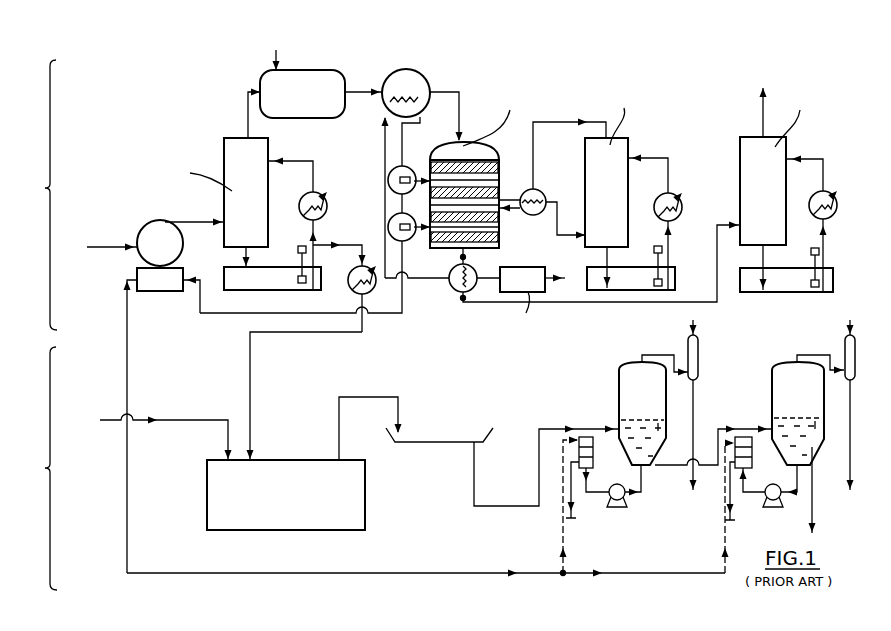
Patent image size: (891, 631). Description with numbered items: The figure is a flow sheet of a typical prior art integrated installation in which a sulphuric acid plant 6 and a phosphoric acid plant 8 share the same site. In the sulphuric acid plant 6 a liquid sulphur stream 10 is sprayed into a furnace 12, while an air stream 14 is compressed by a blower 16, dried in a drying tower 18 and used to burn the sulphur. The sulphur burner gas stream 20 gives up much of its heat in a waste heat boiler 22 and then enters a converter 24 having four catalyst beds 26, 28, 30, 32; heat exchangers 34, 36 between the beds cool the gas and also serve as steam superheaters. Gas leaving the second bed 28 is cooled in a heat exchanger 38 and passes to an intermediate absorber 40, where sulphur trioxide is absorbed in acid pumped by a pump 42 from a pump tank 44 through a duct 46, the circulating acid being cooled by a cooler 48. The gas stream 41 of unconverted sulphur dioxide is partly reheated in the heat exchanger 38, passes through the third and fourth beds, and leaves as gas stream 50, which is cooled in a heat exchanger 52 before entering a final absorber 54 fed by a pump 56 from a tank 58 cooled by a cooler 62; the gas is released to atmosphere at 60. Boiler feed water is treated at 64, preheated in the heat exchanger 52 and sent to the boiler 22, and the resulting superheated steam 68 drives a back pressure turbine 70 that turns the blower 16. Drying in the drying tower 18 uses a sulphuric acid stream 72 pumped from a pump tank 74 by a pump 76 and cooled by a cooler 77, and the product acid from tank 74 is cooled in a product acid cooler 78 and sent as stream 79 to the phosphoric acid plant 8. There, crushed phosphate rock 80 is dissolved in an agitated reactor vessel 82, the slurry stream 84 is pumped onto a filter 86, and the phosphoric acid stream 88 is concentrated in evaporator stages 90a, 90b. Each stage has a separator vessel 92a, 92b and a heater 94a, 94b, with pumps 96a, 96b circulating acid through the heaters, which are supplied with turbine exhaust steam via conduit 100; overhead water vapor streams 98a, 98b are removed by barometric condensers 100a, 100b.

The sulphuric acid plant 6 is at (43, 195).
The phosphoric acid plant 8 is at (43, 468).
The sulphur stream 10 is at (277, 56).
The furnace 12 is at (312, 70).
The air stream 14 is at (106, 246).
The blower 16 is at (147, 229).
The drying tower 18 is at (224, 151).
The sulphur burner gas stream 20 is at (357, 90).
The waste heat boiler 22 is at (398, 69).
The converter 24 is at (488, 172).
The first catalyst bed 26 is at (500, 168).
The second catalyst bed 28 is at (500, 193).
The third catalyst bed 30 is at (502, 211).
The fourth catalyst bed 32 is at (502, 237).
The heat exchanger 34 is at (411, 167).
The heat exchanger 36 is at (405, 241).
The heat exchanger 38 is at (546, 198).
The intermediate absorber 40 is at (630, 148).
The gas stream 41 is at (567, 122).
The pump 42 is at (654, 249).
The pump tank 44 is at (677, 284).
The duct 46 is at (669, 173).
The cooler 48 is at (682, 208).
The gas stream 50 is at (467, 256).
The heat exchanger 52 is at (455, 289).
The final absorber 54 is at (740, 150).
The pump 56 is at (811, 252).
The tank 58 is at (834, 285).
The gas release 60 is at (761, 101).
The cooler 62 is at (837, 212).
The boiler feed water treatment 64 is at (530, 268).
The high pressure superheated steam 68 is at (384, 318).
The back pressure turbine 70 is at (148, 293).
The sulphuric acid stream 72 is at (318, 172).
The pump tank 74 is at (258, 292).
The pump 76 is at (298, 249).
The cooler 77 is at (327, 209).
The product acid cooler 78 is at (352, 290).
The product sulphuric acid stream 79 is at (298, 334).
The crushed phosphate rock 80 is at (198, 420).
The reactor vessel 82 is at (282, 460).
The slurry stream 84 is at (369, 397).
The filter 86 is at (440, 443).
The phosphoric acid stream 88 is at (478, 488).
The evaporator stage 90a is at (622, 406).
The evaporator stage 90b is at (780, 434).
The separator vessel 92a is at (617, 407).
The separator vessel 92b is at (772, 403).
The heater 94a is at (593, 452).
The heater 94b is at (752, 452).
The pump 96a is at (613, 508).
The pump 96b is at (765, 508).
The overhead water vapor stream 98a is at (657, 355).
The overhead water vapor stream 98b is at (818, 355).
The barometric condenser 100a is at (699, 366).
The barometric condenser 100b is at (856, 366).
The conduit 100 is at (305, 573).